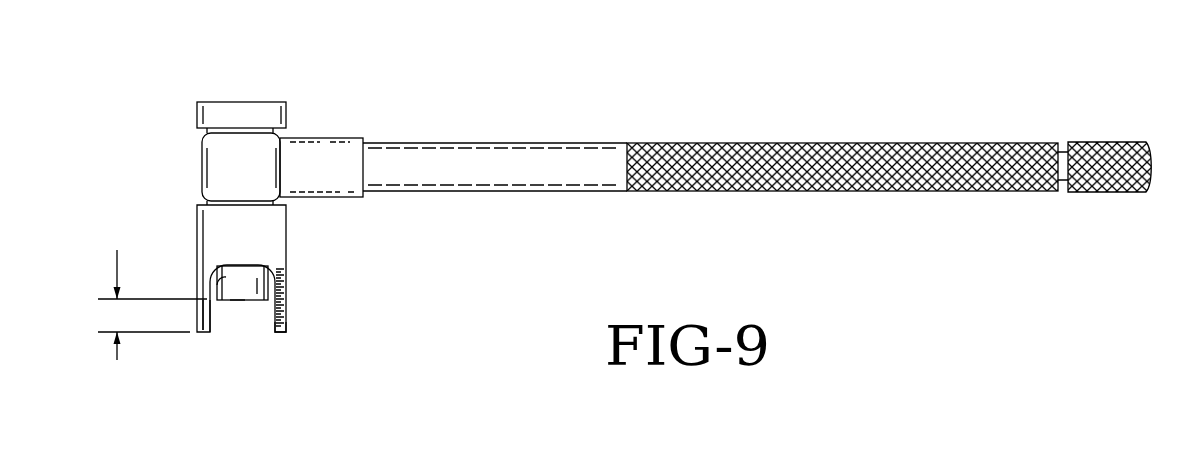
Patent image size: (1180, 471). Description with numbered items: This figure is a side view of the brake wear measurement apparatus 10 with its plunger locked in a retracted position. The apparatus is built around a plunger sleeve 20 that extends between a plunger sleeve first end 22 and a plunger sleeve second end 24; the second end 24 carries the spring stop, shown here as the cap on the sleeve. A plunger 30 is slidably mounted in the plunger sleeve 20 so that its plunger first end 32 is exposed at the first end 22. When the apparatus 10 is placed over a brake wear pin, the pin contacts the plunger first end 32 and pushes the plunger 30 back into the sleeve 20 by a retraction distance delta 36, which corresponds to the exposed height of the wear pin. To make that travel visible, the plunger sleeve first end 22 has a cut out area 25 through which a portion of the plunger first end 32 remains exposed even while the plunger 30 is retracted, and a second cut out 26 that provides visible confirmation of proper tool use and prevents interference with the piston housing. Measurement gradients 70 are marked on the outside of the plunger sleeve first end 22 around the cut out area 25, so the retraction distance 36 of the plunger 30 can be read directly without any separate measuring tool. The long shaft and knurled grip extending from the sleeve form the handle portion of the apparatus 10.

The brake wear measurement apparatus 10 is at (470, 116).
The plunger sleeve 20 is at (228, 242).
The plunger sleeve first end 22 is at (281, 333).
The plunger sleeve second end 24 is at (212, 118).
The cut out area 25 is at (214, 287).
The second cut out 26 is at (224, 302).
The plunger 30 is at (245, 284).
The plunger first end 32 is at (236, 301).
The retraction distance delta 36 is at (152, 305).
The measurement gradients 70 is at (277, 302).